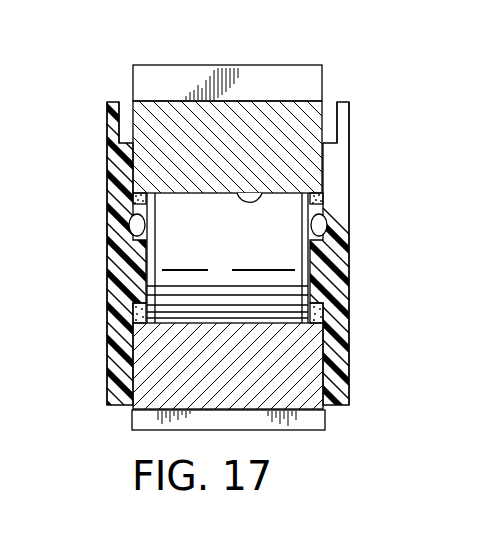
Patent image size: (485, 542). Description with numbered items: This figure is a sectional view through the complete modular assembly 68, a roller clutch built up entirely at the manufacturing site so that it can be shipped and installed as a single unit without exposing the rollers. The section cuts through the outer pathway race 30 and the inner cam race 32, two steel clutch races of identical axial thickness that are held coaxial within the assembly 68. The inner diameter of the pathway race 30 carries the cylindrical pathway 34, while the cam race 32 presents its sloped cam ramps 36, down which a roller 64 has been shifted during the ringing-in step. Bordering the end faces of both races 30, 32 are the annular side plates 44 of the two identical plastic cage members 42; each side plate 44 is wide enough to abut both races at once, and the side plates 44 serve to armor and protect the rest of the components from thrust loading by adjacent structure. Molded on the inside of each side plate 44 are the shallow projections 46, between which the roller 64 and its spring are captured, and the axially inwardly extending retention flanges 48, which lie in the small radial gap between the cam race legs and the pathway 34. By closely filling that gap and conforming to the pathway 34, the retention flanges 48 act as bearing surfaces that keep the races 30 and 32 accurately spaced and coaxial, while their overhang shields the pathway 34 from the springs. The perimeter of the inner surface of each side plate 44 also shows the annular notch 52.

The outer pathway race 30 is at (186, 58).
The inner cam race 32 is at (282, 434).
The cylindrical pathway 34 is at (250, 193).
The cam ramps 36 is at (132, 306).
The cage member 42 is at (92, 385).
The annular side plate 44 is at (116, 266).
The projections 46 is at (129, 228).
The retention flanges 48 is at (137, 205).
The annular notch 52 is at (125, 117).
The roller 64 is at (287, 279).
The modular assembly 68 is at (318, 50).